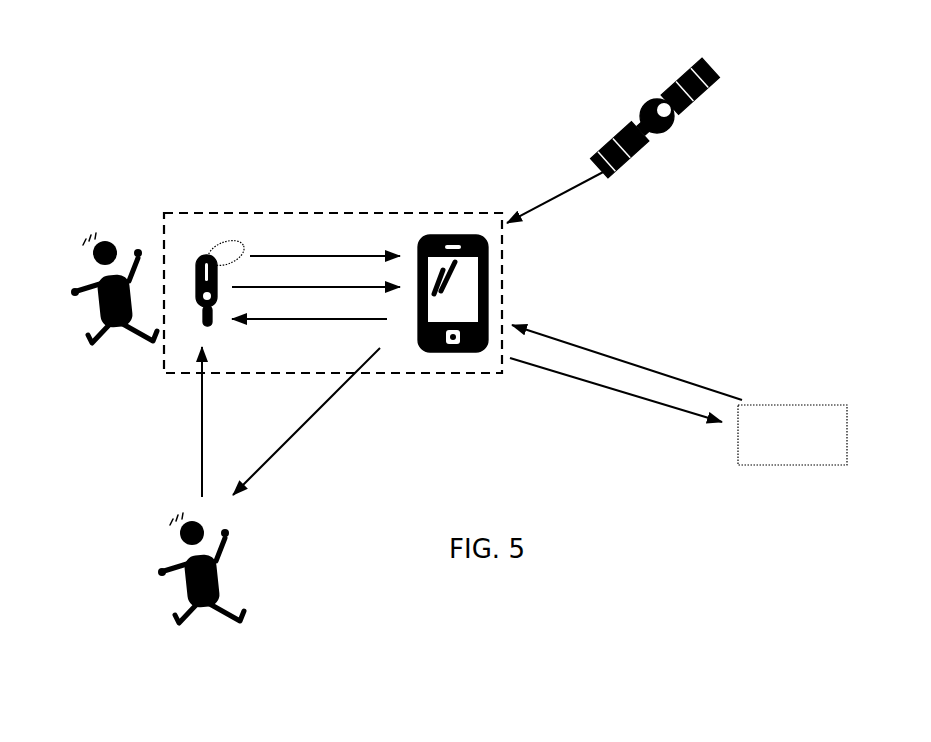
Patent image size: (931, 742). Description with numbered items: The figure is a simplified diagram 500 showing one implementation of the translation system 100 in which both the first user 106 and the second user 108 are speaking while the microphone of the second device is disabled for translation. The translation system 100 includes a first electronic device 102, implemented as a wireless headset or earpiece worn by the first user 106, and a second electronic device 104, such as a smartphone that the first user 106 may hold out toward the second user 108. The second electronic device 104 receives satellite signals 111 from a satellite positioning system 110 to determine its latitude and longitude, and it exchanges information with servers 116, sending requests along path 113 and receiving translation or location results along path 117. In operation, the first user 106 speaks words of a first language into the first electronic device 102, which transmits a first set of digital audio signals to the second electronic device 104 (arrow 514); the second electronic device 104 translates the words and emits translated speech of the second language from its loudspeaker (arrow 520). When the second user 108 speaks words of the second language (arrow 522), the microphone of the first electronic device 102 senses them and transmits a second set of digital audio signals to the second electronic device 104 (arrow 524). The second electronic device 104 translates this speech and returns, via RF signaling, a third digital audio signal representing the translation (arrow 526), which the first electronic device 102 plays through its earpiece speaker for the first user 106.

The translation system 100 is at (290, 210).
The first electronic device 102 is at (214, 229).
The second electronic device 104 is at (461, 228).
The first user 106 is at (65, 343).
The second user 108 is at (180, 632).
The satellite positioning system 110 is at (556, 103).
The satellite signals 111 is at (557, 196).
The path 113 is at (616, 398).
The servers 116 is at (800, 465).
The path 117 is at (627, 362).
The simplified diagram 500 is at (479, 484).
The arrow 514 is at (325, 244).
The arrow 520 is at (306, 421).
The arrow 522 is at (179, 422).
The arrow 524 is at (316, 274).
The arrow 526 is at (309, 308).